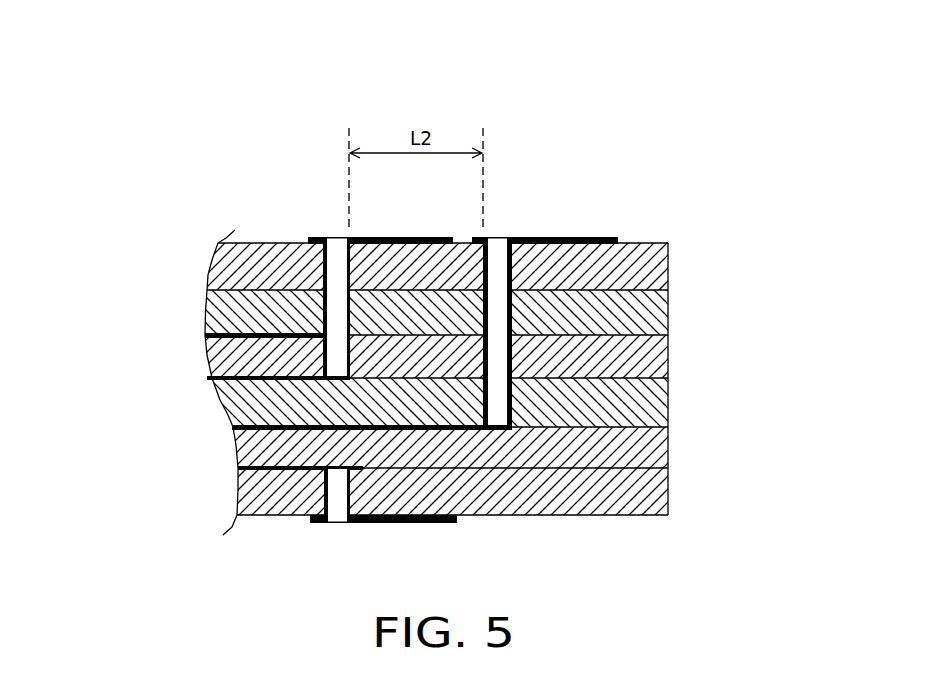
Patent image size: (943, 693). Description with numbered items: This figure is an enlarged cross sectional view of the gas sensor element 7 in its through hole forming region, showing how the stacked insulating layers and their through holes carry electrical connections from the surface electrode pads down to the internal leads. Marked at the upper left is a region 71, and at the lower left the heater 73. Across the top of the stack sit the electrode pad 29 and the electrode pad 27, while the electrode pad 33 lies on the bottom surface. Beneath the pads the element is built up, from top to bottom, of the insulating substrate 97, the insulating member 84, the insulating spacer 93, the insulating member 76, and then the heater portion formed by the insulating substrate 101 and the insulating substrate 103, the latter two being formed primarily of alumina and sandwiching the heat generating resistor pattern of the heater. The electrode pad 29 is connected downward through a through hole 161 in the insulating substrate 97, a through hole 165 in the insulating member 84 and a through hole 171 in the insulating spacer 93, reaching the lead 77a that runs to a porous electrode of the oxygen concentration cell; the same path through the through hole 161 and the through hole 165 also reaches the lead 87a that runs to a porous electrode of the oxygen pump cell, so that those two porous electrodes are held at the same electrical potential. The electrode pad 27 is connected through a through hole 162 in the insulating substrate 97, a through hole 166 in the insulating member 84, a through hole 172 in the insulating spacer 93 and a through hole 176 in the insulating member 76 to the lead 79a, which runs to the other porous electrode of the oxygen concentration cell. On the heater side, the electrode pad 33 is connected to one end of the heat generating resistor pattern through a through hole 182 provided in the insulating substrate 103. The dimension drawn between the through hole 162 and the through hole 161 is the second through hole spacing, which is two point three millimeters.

The gas sensor element 7 is at (417, 23).
The first region 71 is at (106, 256).
The heater 73 is at (134, 503).
The electrode pad 27 is at (575, 237).
The electrode pad 29 is at (402, 237).
The electrode pad 33 is at (403, 524).
The through hole 161 is at (332, 272).
The through hole 162 is at (493, 270).
The through hole 182 is at (338, 498).
The insulating substrate 97 is at (630, 265).
The insulating member 84 is at (635, 322).
The insulating spacer 93 is at (635, 370).
The insulating member 76 is at (632, 410).
The insulating substrate 101 is at (625, 448).
The insulating substrate 103 is at (625, 496).
The lead 87a is at (227, 333).
The lead 77a is at (243, 377).
The lead 79a is at (250, 424).
The through hole 165 is at (330, 303).
The through hole 171 is at (330, 354).
The through hole 166 is at (502, 309).
The through hole 172 is at (502, 355).
The through hole 176 is at (502, 402).